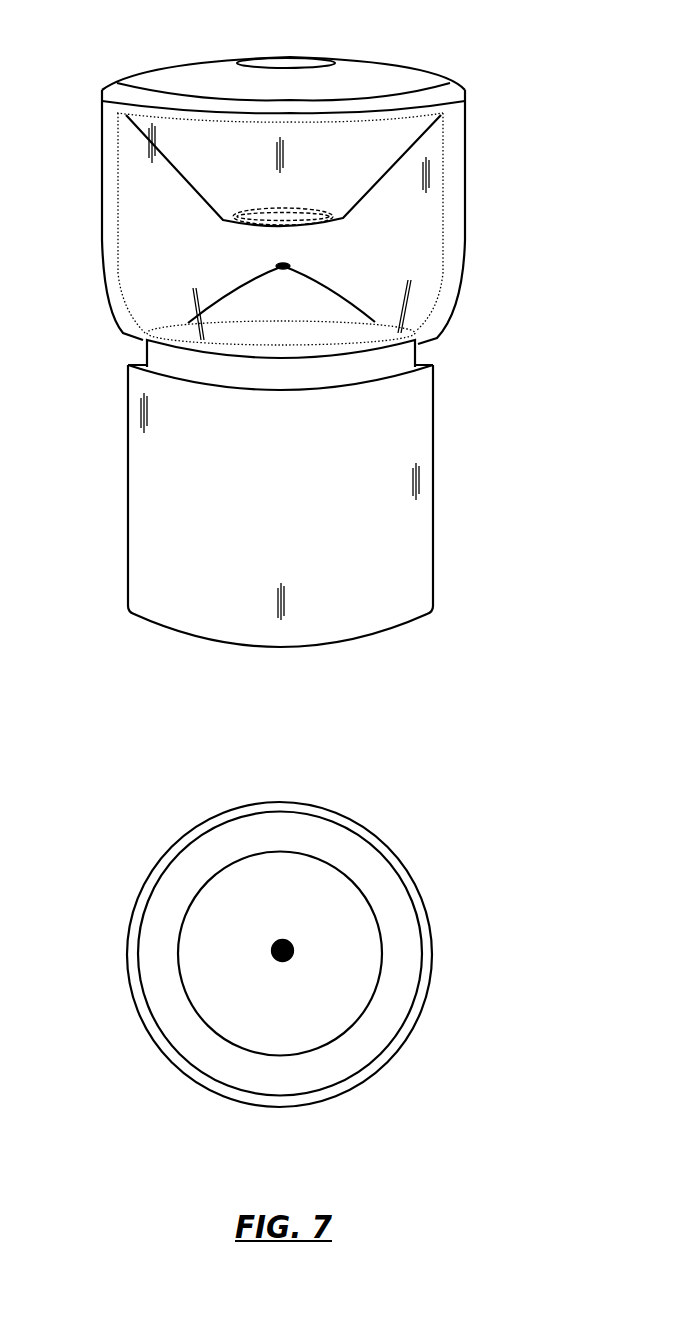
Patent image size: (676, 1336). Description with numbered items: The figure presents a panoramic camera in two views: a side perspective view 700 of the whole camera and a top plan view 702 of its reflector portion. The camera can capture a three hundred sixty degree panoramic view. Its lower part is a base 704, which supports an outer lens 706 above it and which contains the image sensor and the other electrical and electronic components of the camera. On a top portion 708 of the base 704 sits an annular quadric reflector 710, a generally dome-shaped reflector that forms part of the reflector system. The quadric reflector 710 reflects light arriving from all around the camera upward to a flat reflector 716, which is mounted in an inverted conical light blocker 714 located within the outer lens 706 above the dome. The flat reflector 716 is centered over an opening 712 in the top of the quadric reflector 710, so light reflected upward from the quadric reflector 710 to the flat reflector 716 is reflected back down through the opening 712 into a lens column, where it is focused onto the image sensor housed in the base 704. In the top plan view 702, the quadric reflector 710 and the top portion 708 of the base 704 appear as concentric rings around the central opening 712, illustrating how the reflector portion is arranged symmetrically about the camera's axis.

The side perspective view 700 is at (581, 40).
The top plan view 702 is at (503, 822).
The base 704 is at (434, 480).
The outer lens 706 is at (102, 187).
The top portion 708 is at (173, 331).
The annular quadric reflector 710 is at (353, 302).
The opening 712 is at (278, 264).
The inverted conical light blocker 714 is at (200, 200).
The flat reflector 716 is at (295, 207).